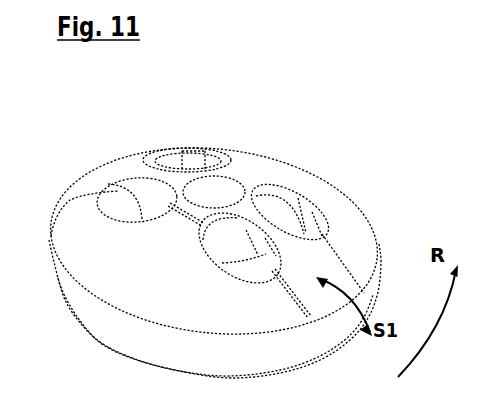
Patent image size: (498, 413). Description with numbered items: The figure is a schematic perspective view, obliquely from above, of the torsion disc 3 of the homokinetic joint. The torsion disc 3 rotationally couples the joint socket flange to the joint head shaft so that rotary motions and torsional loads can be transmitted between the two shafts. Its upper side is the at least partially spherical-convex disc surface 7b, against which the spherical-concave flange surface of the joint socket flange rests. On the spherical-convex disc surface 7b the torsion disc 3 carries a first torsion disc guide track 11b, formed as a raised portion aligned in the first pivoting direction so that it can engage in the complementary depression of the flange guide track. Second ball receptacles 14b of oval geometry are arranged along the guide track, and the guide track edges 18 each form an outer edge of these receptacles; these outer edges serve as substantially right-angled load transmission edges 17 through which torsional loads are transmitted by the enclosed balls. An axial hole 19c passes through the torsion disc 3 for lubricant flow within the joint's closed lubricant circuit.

The torsion disc 3 is at (351, 91).
The first torsion disc guide track 11b is at (105, 170).
The load transmission edges 17 is at (126, 188).
The guide track edges 18 is at (235, 172).
The axial hole 19c is at (200, 185).
The spherical-convex disc surface 7b is at (286, 177).
The second ball receptacle 14b is at (322, 229).